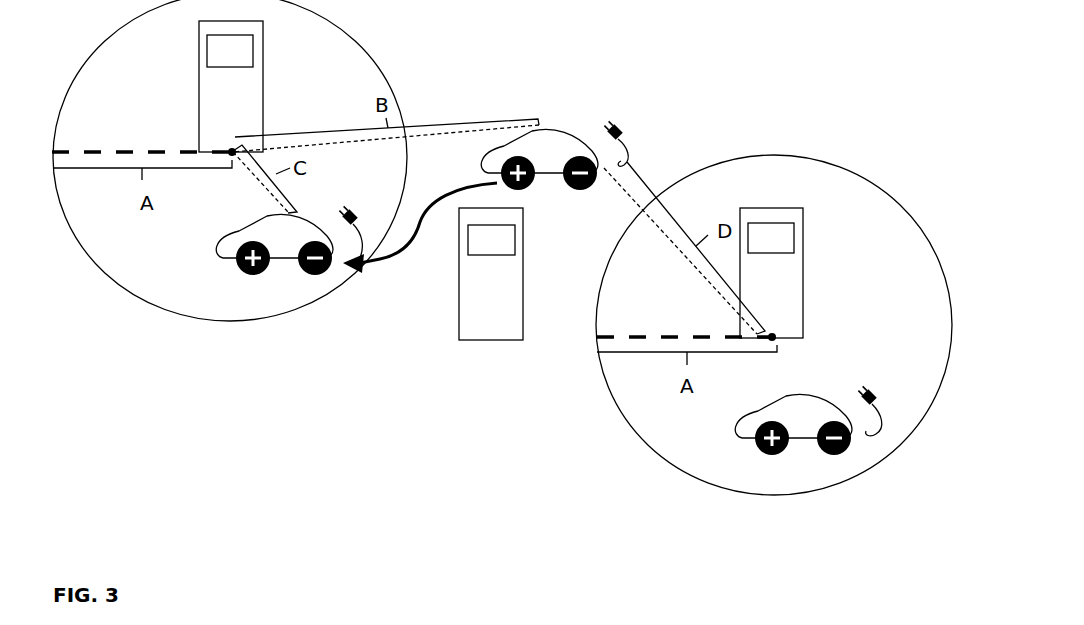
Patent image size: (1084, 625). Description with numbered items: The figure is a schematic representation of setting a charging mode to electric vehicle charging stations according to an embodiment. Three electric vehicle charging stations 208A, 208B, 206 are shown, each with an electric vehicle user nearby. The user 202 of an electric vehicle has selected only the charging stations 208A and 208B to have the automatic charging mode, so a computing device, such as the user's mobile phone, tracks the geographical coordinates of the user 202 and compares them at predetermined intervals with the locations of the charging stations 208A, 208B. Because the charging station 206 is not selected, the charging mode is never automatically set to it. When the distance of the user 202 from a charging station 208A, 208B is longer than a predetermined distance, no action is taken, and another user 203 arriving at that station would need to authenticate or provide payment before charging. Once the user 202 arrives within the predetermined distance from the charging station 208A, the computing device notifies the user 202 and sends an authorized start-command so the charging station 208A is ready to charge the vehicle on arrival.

The electric vehicle charging station 208A is at (263, 88).
The electric vehicle charging station 208B is at (803, 277).
The electric vehicle charging station 206 is at (523, 280).
The user 202 is at (358, 207).
The another user 203 is at (878, 392).